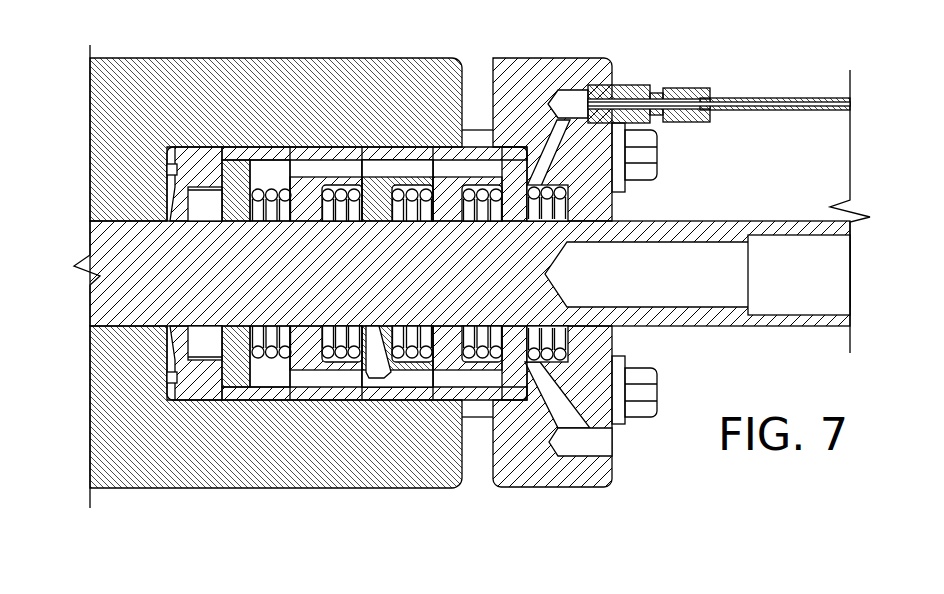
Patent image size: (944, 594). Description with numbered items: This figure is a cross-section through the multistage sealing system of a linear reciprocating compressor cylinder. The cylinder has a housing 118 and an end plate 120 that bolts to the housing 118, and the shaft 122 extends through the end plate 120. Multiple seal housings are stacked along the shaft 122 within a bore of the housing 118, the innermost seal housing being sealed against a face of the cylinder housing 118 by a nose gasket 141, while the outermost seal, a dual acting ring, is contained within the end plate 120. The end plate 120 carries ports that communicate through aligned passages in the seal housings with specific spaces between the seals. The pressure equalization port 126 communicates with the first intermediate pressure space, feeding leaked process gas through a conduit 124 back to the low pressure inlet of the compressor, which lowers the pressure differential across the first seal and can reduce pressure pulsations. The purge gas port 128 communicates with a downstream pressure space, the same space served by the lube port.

The housing 118 is at (145, 488).
The end plate 120 is at (548, 488).
The shaft 122 is at (804, 221).
The conduit 124 is at (792, 98).
The pressure equalization port 126 is at (617, 88).
The purge gas port 128 is at (613, 438).
The nose gasket 141 is at (167, 343).